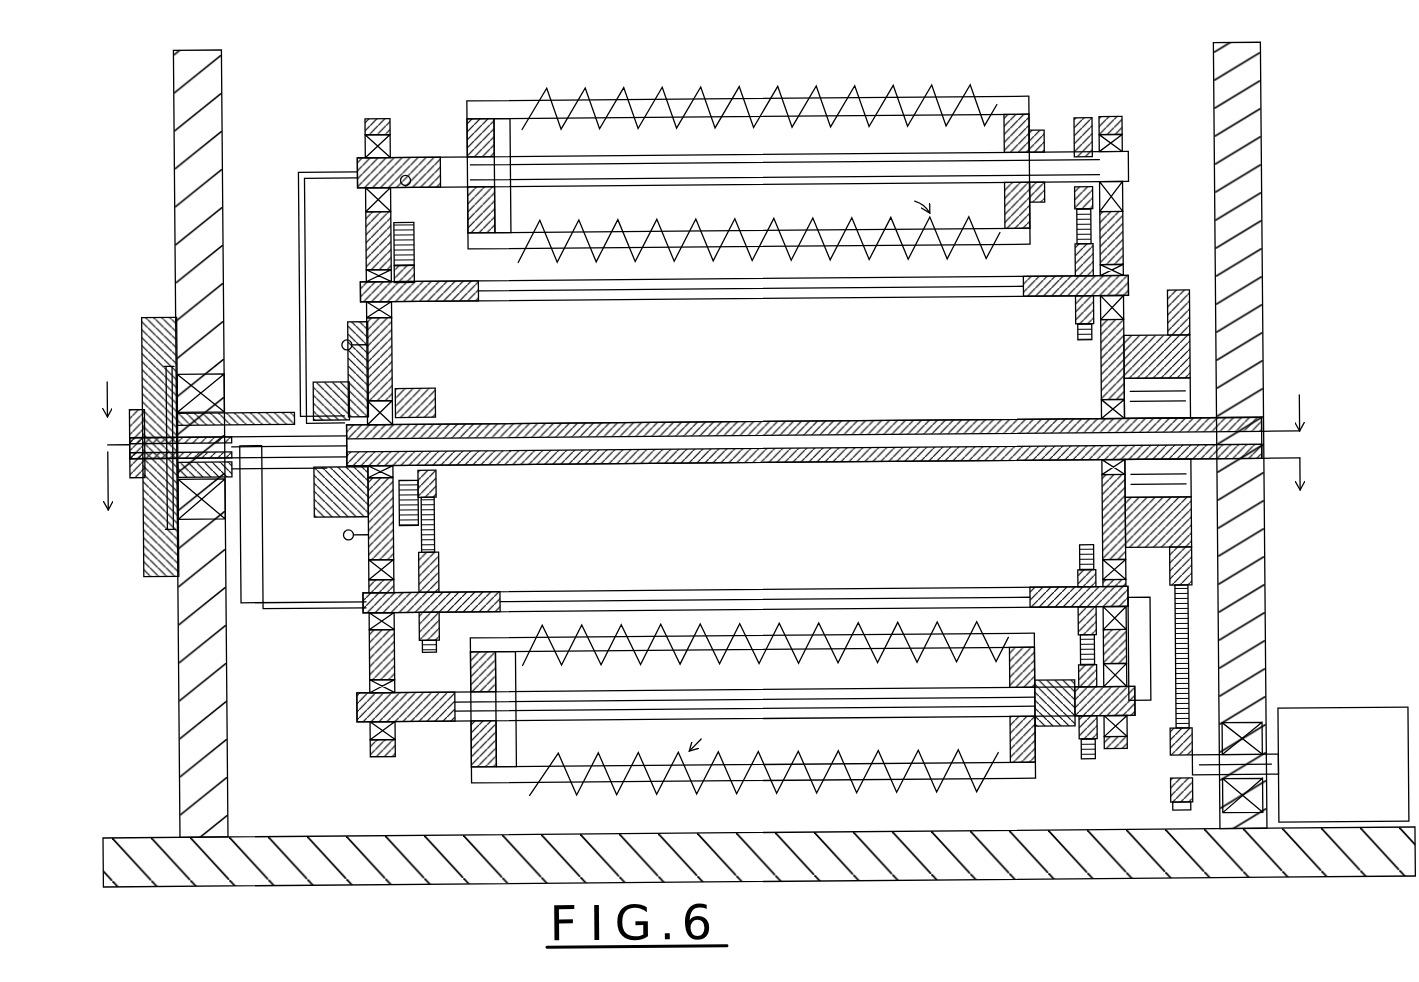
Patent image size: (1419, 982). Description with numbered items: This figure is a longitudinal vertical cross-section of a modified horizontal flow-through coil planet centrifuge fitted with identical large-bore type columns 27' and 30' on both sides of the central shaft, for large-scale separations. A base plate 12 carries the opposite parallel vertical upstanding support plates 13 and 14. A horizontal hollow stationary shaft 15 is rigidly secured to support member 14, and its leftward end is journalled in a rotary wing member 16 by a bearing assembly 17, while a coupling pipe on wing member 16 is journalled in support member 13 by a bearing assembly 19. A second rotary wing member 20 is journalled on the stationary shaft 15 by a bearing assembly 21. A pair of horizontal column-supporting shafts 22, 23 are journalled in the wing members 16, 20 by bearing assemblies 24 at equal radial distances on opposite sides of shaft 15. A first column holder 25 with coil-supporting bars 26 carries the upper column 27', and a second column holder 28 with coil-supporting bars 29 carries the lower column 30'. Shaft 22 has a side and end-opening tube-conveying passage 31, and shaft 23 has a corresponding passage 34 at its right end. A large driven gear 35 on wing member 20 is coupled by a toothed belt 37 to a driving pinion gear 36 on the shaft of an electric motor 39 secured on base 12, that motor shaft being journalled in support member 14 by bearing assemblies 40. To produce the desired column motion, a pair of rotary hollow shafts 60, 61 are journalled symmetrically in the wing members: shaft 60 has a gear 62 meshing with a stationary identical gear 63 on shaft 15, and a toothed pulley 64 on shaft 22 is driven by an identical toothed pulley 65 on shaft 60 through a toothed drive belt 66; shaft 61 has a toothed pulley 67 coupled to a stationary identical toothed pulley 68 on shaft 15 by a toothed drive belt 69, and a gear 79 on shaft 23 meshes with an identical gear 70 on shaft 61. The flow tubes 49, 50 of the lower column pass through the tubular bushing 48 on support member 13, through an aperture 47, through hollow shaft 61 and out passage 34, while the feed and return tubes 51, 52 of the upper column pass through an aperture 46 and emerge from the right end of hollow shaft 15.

The base plate 12 is at (360, 843).
The upstanding support plate 13 is at (217, 264).
The upstanding support plate 14 is at (1262, 214).
The horizontal hollow stationary shaft 15 is at (722, 427).
The rotary wing member 16 is at (371, 655).
The bearing assembly 17 is at (348, 517).
The bearing assembly 19 is at (216, 399).
The second rotary wing member 20 is at (1128, 245).
The bearing assembly 21 is at (1128, 410).
The column-supporting shaft 22 is at (818, 165).
The column-supporting shaft 23 is at (843, 696).
The bearing assemblies 24 is at (371, 152).
The first column holder 25 is at (1040, 252).
The coil-supporting bars 26 is at (891, 107).
The large-bore type column 27' is at (756, 153).
The second column holder 28 is at (1036, 788).
The coil-supporting bars 29 is at (741, 655).
The large-bore type column 30' is at (764, 785).
The tube-conveying passage 31 is at (414, 188).
The tube-conveying passage 34 is at (1054, 696).
The large driven gear 35 is at (1172, 327).
The driving pinion gear 36 is at (1171, 800).
The toothed belt 37 is at (1188, 708).
The electric motor 39 is at (1326, 718).
The bearing assemblies 40 is at (1252, 738).
The aperture 46 is at (307, 430).
The aperture 47 is at (262, 474).
The axial bushing 48 is at (236, 438).
The feed tube 49 is at (111, 382).
The return tube 50 is at (111, 510).
The feed tube 51 is at (1303, 405).
The return tube 52 is at (1303, 468).
The rotary hollow shaft 60 is at (534, 304).
The rotary hollow shaft 61 is at (572, 596).
The gear 62 is at (419, 343).
The stationary gear 63 is at (434, 388).
The toothed pulley 64 is at (1080, 138).
The toothed pulley 65 is at (1080, 330).
The toothed drive belt 66 is at (1080, 230).
The toothed pulley 67 is at (441, 575).
The stationary toothed pulley 68 is at (439, 485).
The toothed drive belt 69 is at (437, 528).
The gear 70 is at (1080, 572).
The gear 79 is at (1086, 770).